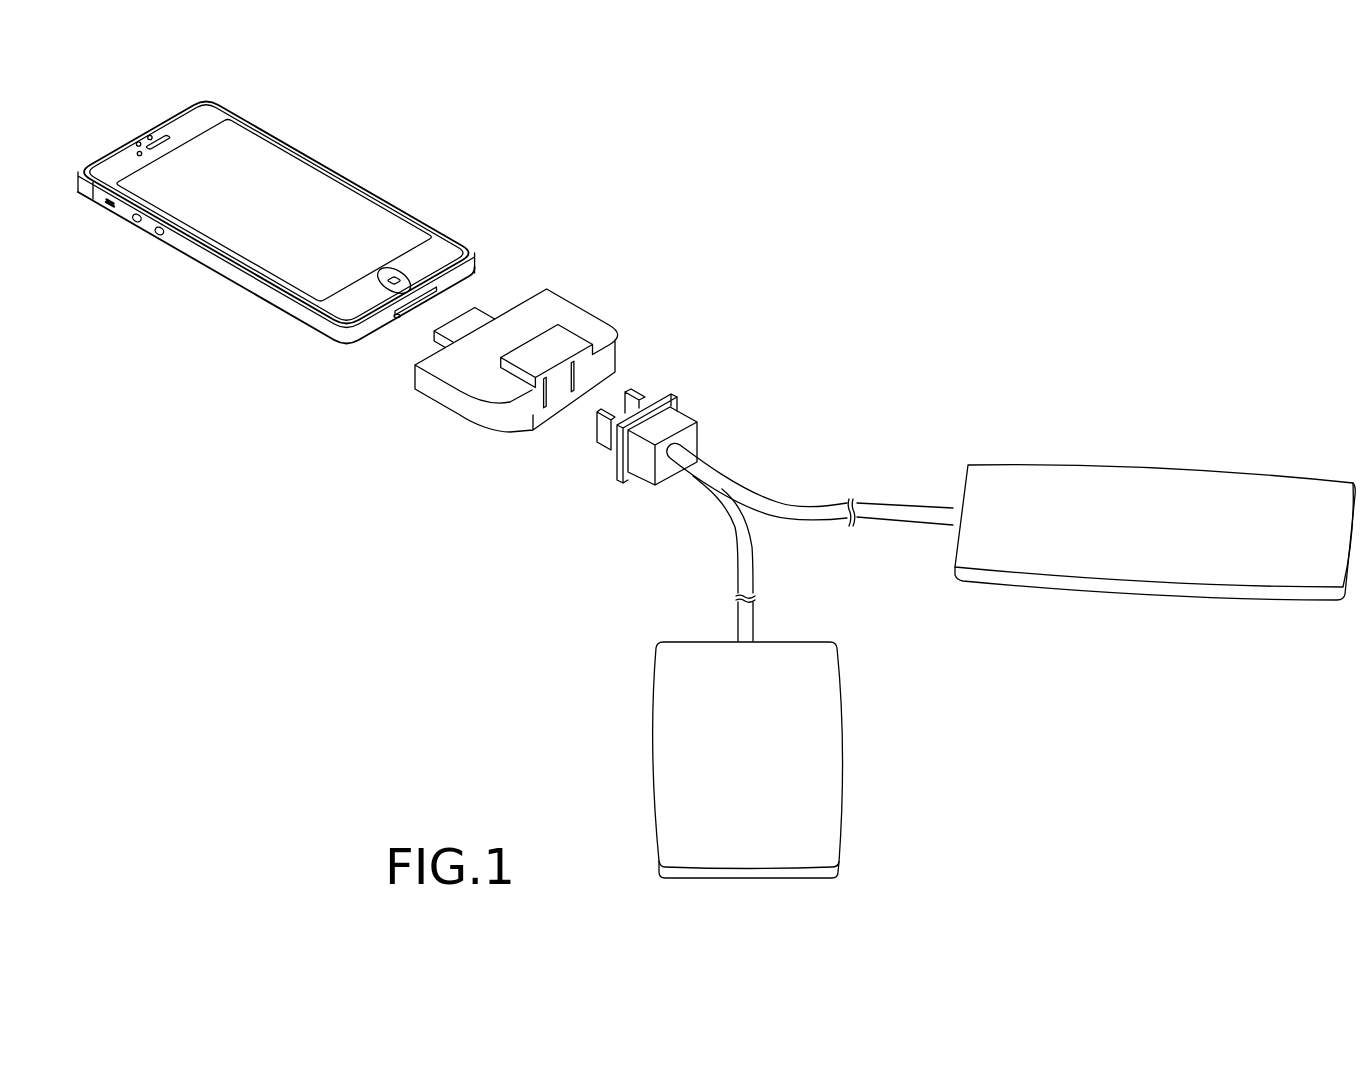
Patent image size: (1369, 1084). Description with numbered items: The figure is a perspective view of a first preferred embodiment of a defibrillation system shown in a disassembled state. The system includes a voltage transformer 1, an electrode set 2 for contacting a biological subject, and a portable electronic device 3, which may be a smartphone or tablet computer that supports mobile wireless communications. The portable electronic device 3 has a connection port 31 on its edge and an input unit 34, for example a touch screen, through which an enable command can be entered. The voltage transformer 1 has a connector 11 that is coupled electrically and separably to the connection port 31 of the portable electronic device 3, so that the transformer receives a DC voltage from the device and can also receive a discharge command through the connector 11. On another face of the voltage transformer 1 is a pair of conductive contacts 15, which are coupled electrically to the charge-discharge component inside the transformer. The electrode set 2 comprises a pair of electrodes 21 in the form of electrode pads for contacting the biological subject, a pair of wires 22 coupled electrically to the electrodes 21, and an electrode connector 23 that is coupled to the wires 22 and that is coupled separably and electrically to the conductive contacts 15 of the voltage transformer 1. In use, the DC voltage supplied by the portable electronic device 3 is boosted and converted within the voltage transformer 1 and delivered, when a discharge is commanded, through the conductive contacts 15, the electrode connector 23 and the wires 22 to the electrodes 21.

The voltage transformer 1 is at (590, 292).
The connector 11 is at (463, 315).
The conductive contacts 15 is at (578, 374).
The electrode set 2 is at (976, 619).
The electrodes 21 is at (1161, 466).
The wires 22 is at (821, 496).
The electrode connector 23 is at (686, 411).
The portable electronic device 3 is at (359, 168).
The connection port 31 is at (398, 319).
The input unit 34 is at (238, 237).